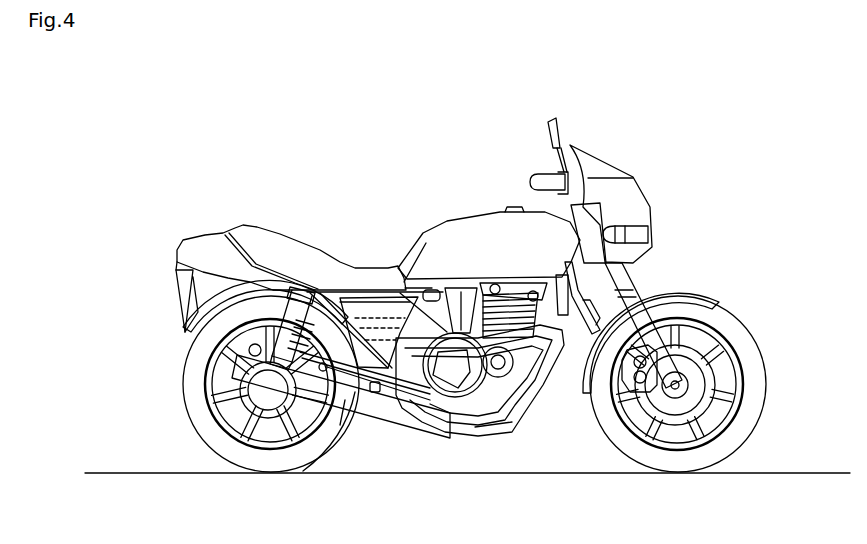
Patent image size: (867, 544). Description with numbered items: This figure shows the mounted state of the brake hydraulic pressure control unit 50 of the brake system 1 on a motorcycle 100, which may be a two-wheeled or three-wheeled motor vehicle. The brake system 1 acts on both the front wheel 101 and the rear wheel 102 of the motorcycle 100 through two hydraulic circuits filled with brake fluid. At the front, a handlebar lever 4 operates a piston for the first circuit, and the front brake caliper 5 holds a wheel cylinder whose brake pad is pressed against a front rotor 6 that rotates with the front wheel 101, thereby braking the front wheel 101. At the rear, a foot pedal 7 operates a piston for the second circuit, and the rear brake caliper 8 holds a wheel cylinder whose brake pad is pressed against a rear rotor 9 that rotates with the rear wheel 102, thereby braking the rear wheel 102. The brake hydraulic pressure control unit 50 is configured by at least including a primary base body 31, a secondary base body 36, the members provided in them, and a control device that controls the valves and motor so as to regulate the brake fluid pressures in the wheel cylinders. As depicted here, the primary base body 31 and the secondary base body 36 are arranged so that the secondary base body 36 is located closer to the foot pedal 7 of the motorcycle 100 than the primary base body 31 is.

The motorcycle 100 is at (703, 86).
The brake system 1 is at (310, 189).
The handlebar lever 4 is at (578, 175).
The front brake caliper 5 is at (652, 373).
The front rotor 6 is at (703, 372).
The foot pedal 7 is at (412, 403).
The rear brake caliper 8 is at (243, 348).
The rear rotor 9 is at (243, 392).
The primary base body 31 is at (372, 317).
The secondary base body 36 is at (327, 418).
The brake hydraulic pressure control unit 50 is at (383, 310).
The front wheel 101 is at (733, 430).
The rear wheel 102 is at (218, 435).